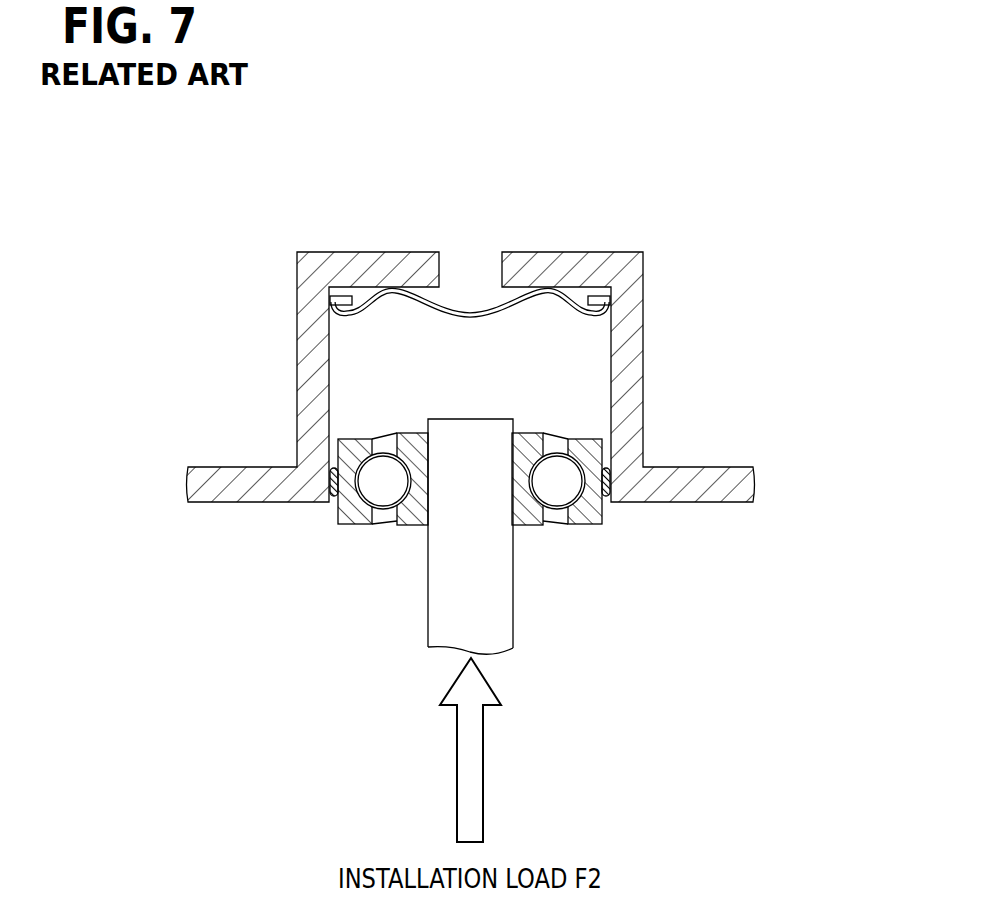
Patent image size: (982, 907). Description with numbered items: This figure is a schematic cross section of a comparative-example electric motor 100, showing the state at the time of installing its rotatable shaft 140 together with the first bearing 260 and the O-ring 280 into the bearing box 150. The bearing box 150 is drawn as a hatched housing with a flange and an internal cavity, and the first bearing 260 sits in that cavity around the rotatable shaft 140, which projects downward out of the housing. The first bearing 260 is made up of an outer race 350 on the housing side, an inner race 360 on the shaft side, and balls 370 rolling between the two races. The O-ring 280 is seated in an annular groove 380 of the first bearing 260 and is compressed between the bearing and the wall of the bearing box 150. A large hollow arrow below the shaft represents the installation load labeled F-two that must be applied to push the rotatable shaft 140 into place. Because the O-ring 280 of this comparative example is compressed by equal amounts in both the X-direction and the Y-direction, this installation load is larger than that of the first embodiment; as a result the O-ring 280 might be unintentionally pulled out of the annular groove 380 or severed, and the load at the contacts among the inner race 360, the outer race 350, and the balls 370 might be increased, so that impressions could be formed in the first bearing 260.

The electric motor 100 is at (471, 425).
The rotatable shaft 140 is at (438, 579).
The bearing box 150 is at (632, 359).
The first bearing 260 is at (510, 550).
The O-ring 280 is at (333, 518).
The outer race 350 is at (595, 508).
The inner race 360 is at (528, 512).
The balls 370 is at (558, 487).
The annular groove 380 is at (610, 482).